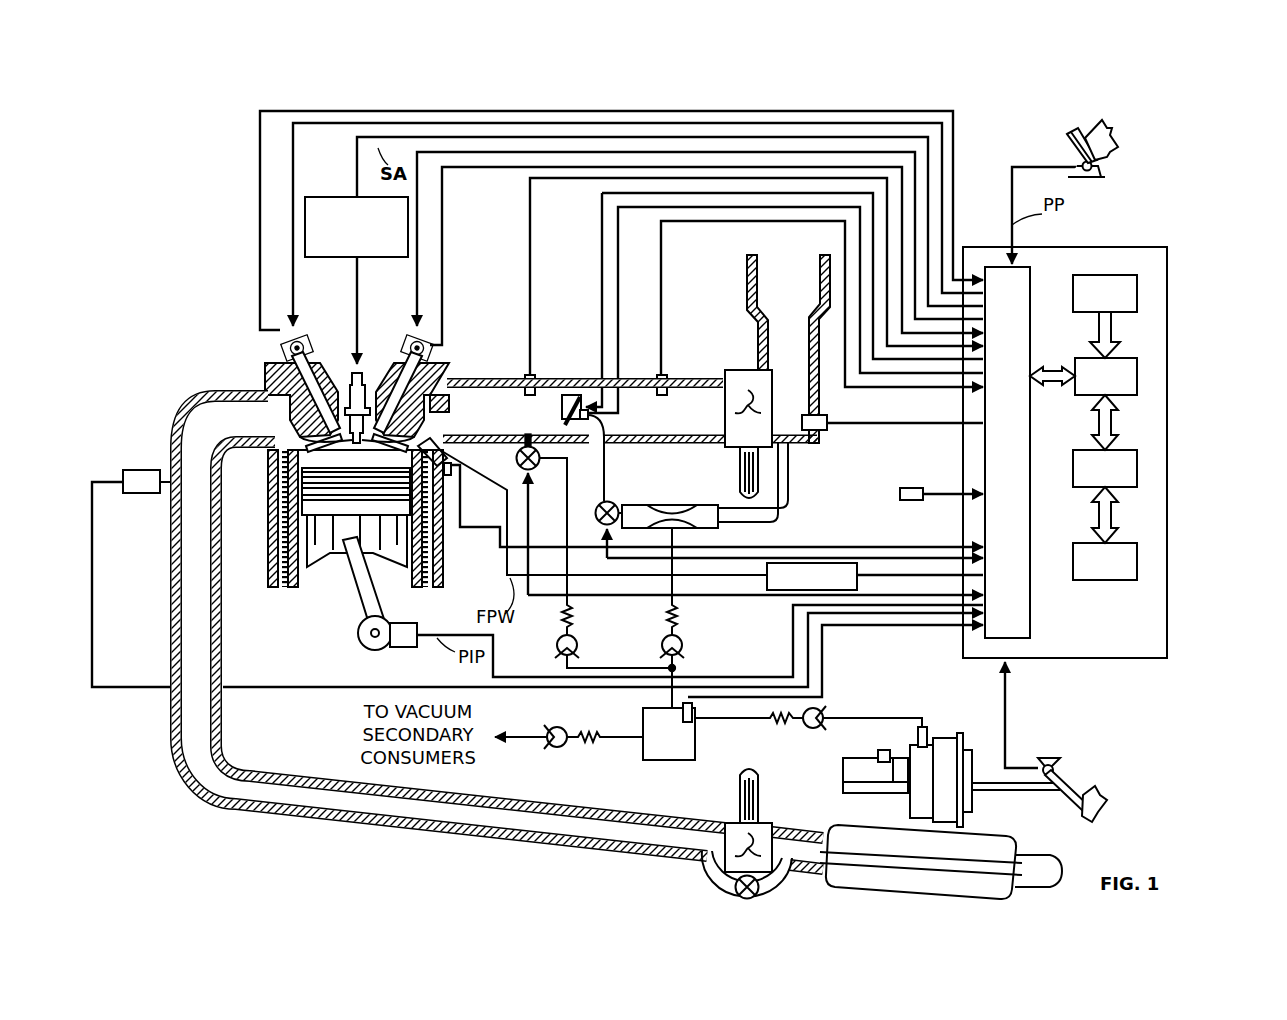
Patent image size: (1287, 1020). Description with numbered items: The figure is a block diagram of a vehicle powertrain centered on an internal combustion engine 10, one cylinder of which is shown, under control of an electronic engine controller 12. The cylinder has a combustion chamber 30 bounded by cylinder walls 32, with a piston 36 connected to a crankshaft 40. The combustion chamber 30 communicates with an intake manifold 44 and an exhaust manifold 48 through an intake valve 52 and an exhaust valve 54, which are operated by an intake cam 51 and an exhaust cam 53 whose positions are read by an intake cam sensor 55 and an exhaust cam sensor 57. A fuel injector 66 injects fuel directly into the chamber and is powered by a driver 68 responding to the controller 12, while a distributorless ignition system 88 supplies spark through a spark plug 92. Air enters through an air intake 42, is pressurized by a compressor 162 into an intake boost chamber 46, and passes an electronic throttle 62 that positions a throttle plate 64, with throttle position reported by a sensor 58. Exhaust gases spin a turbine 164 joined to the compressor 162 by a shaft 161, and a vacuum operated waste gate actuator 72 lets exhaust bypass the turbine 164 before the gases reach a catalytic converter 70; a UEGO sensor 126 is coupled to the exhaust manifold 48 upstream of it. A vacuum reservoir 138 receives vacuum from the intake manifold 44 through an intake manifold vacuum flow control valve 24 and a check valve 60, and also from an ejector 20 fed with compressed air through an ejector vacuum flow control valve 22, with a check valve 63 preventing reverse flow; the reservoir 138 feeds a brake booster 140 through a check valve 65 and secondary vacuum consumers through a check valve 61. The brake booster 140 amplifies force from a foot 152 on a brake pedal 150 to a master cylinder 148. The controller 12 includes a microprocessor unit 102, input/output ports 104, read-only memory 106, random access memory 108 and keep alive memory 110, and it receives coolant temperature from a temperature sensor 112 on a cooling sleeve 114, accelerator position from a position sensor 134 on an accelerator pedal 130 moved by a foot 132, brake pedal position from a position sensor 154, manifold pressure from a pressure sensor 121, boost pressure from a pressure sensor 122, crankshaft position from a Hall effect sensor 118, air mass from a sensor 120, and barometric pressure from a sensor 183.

The internal combustion engine 10 is at (205, 320).
The electronic engine controller 12 is at (1158, 248).
The ejector 20 is at (668, 504).
The ejector vacuum flow control valve 22 is at (602, 525).
The intake manifold vacuum flow control valve 24 is at (517, 458).
The combustion chamber 30 is at (352, 455).
The cylinder walls 32 is at (303, 575).
The piston 36 is at (340, 548).
The crankshaft 40 is at (365, 646).
The air intake 42 is at (788, 349).
The intake manifold 44 is at (583, 411).
The intake boost chamber 46 is at (710, 420).
The exhaust manifold 48 is at (499, 646).
The intake cam 51 is at (410, 334).
The intake valve 52 is at (398, 432).
The exhaust cam 53 is at (300, 334).
The exhaust valve 54 is at (268, 392).
The intake cam sensor 55 is at (430, 350).
The exhaust cam sensor 57 is at (283, 352).
The throttle position sensor 58 is at (605, 440).
The check valve 60 is at (577, 640).
The check valve 61 is at (566, 746).
The electronic throttle 62 is at (566, 392).
The check valve 63 is at (686, 640).
The throttle plate 64 is at (578, 392).
The check valve 65 is at (808, 727).
The fuel injector 66 is at (592, 506).
The driver 68 is at (858, 576).
The catalytic converter 70 is at (825, 888).
The waste gate actuator 72 is at (736, 890).
The distributorless ignition system 88 is at (335, 186).
The spark plug 92 is at (362, 368).
The microprocessor unit 102 is at (1137, 378).
The input/output ports 104 is at (1030, 272).
The read-only memory 106 is at (1137, 290).
The random access memory 108 is at (1137, 470).
The keep alive memory 110 is at (1137, 565).
The temperature sensor 112 is at (450, 478).
The cooling sleeve 114 is at (440, 562).
The Hall effect sensor 118 is at (405, 645).
The air mass sensor 120 is at (830, 430).
The pressure sensor 121 is at (526, 376).
The pressure sensor 122 is at (663, 375).
The UEGO sensor 126 is at (123, 474).
The accelerator pedal 130 is at (1067, 140).
The foot 132 is at (1118, 140).
The position sensor 134 is at (1100, 167).
The vacuum reservoir 138 is at (643, 712).
The brake booster 140 is at (950, 738).
The master cylinder 148 is at (843, 770).
The brake pedal 150 is at (1065, 805).
The foot 152 is at (1097, 790).
The position sensor 154 is at (1045, 760).
The shaft 161 is at (740, 485).
The compressor 162 is at (752, 370).
The turbine 164 is at (725, 828).
The barometric pressure sensor 183 is at (905, 488).